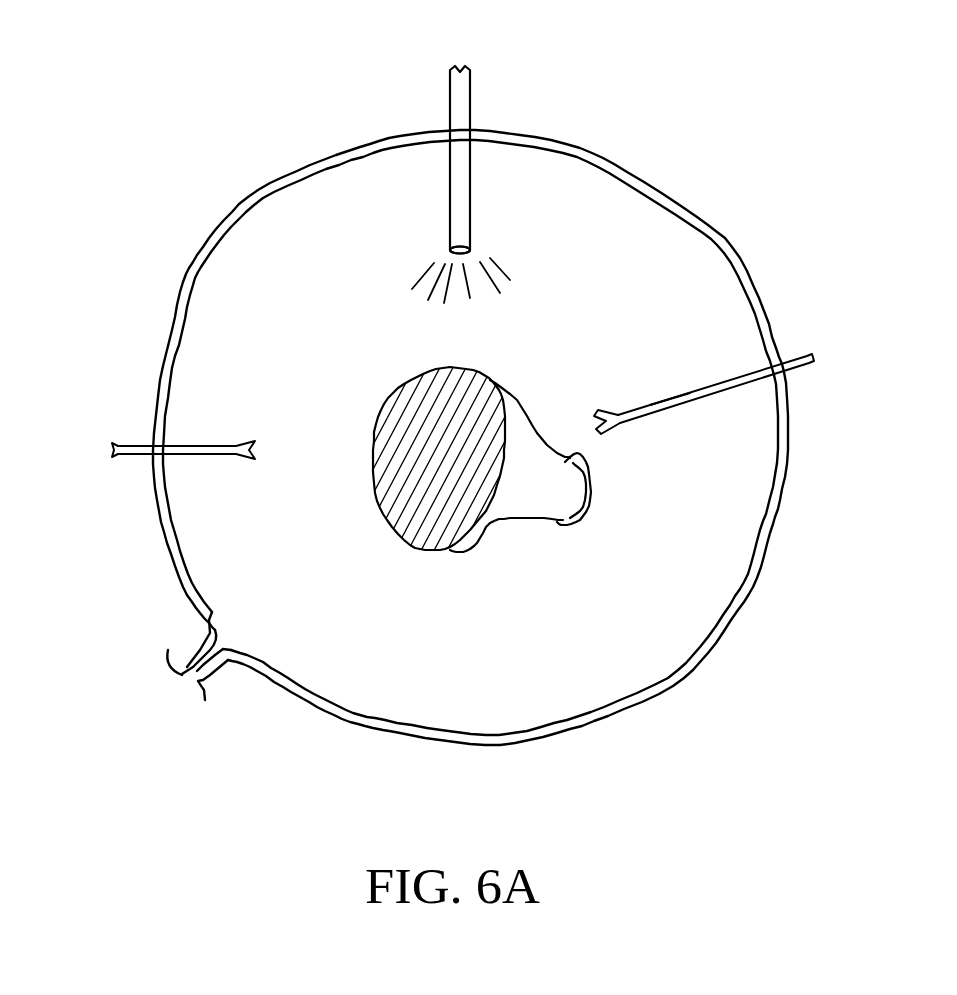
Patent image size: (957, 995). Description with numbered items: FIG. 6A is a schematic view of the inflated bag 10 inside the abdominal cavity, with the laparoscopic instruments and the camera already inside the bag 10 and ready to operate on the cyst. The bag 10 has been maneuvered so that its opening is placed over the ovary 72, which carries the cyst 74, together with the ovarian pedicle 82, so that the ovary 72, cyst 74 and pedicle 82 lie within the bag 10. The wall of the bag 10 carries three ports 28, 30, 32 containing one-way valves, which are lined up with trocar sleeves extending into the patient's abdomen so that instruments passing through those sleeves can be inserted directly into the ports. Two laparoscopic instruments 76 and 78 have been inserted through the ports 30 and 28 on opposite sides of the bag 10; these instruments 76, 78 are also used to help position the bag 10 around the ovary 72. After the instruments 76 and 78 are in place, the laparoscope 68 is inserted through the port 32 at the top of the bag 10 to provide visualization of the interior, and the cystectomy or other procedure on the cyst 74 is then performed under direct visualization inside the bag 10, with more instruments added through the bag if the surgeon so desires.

The bag 10 is at (670, 688).
The port 28 is at (806, 388).
The port 30 is at (142, 470).
The port 32 is at (496, 124).
The laparoscope 68 is at (470, 233).
The ovary 72 is at (513, 497).
The cyst 74 is at (423, 522).
The laparoscopic instrument 76 is at (218, 445).
The laparoscopic instrument 78 is at (668, 406).
The ovarian pedicle 82 is at (580, 510).